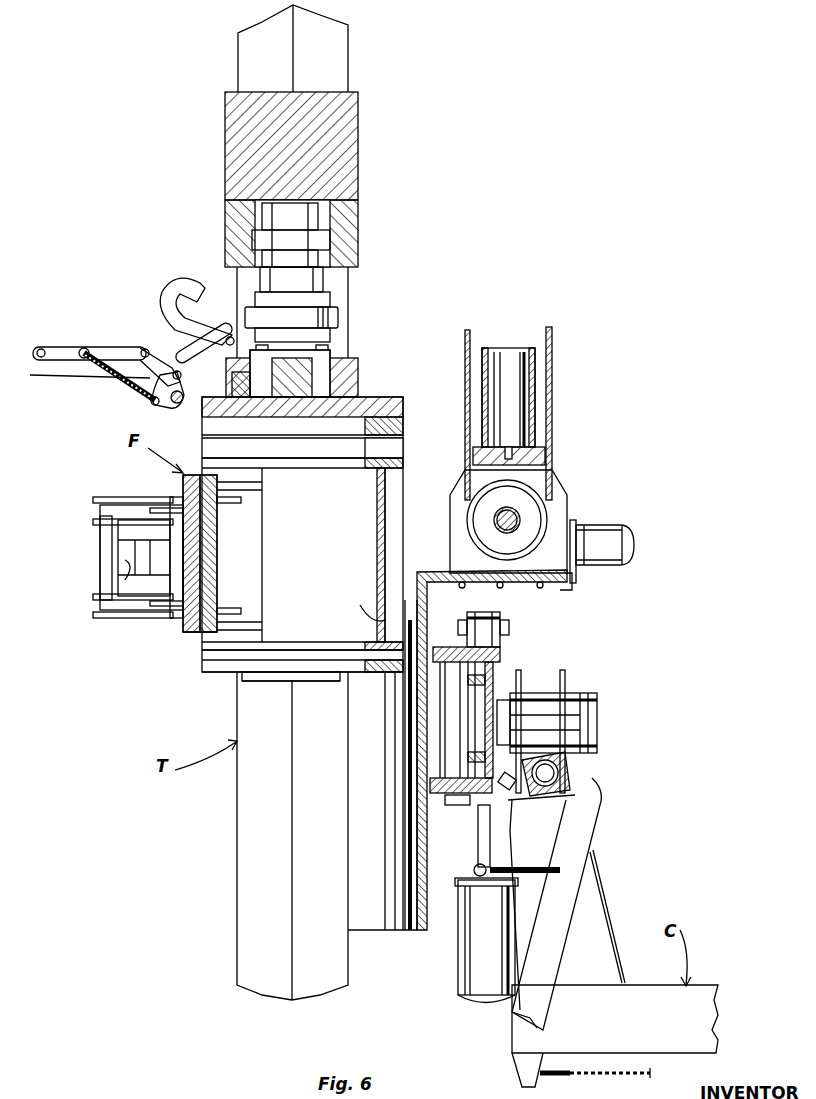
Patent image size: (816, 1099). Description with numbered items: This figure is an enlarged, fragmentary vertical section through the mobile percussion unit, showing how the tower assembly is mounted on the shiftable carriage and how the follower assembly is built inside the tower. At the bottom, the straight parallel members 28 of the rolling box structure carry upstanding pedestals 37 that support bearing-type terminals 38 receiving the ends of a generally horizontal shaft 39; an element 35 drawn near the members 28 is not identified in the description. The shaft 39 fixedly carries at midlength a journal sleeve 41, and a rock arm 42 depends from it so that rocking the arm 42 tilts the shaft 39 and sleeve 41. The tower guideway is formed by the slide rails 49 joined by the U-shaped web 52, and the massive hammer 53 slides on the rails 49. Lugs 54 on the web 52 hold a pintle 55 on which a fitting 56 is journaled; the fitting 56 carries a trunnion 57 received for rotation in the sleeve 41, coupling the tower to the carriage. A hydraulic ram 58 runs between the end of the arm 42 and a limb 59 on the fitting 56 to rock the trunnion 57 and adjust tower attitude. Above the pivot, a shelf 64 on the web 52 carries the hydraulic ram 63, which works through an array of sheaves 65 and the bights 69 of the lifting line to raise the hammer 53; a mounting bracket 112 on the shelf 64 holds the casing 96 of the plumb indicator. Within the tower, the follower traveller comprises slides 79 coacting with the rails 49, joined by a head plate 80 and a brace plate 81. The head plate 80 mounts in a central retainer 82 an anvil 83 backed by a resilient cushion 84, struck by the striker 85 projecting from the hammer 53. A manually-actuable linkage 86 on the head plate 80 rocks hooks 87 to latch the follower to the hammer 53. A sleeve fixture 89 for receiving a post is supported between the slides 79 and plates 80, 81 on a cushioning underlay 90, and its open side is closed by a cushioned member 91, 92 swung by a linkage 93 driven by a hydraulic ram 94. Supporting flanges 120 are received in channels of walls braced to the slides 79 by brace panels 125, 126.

The members 28 is at (662, 1025).
The chain 35 is at (632, 1078).
The pedestals 37 is at (598, 958).
The bearing-type terminals 38 is at (515, 790).
The shaft 39 is at (572, 775).
The journal sleeve 41 is at (547, 695).
The rock arm 42 is at (563, 920).
The slide rails 49 is at (331, 62).
The web 52 is at (375, 807).
The hammer 53 is at (353, 148).
The lugs 54 is at (455, 650).
The pintle 55 is at (465, 810).
The fitting 56 is at (493, 690).
The trunnion 57 is at (530, 692).
The hydraulic ram 58 is at (470, 942).
The limb 59 is at (502, 613).
The hydraulic ram 63 is at (515, 355).
The shelf 64 is at (425, 572).
The sheaves 65 is at (520, 557).
The bights 69 is at (466, 402).
The slides 79 is at (280, 680).
The head plate 80 is at (388, 400).
The brace plate 81 is at (215, 674).
The retainer 82 is at (360, 385).
The anvil 83 is at (284, 355).
The cushion 84 is at (330, 362).
The striker 85 is at (293, 328).
The manually-actuable linkage 86 is at (118, 350).
The hooks 87 is at (215, 308).
The sleeve fixture 89 is at (346, 615).
The cushioning underlay 90 is at (404, 428).
The member 91 is at (220, 548).
The cushion 92 is at (196, 632).
The linkage 93 is at (125, 510).
The hydraulic ram 94 is at (130, 585).
The casing 96 is at (595, 530).
The mounting bracket 112 is at (570, 588).
The supporting flanges 120 is at (212, 475).
The brace panel 125 is at (390, 489).
The brace panel 126 is at (372, 632).